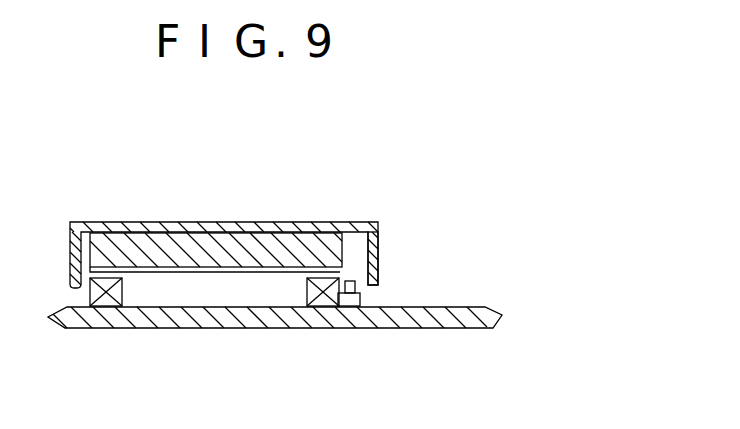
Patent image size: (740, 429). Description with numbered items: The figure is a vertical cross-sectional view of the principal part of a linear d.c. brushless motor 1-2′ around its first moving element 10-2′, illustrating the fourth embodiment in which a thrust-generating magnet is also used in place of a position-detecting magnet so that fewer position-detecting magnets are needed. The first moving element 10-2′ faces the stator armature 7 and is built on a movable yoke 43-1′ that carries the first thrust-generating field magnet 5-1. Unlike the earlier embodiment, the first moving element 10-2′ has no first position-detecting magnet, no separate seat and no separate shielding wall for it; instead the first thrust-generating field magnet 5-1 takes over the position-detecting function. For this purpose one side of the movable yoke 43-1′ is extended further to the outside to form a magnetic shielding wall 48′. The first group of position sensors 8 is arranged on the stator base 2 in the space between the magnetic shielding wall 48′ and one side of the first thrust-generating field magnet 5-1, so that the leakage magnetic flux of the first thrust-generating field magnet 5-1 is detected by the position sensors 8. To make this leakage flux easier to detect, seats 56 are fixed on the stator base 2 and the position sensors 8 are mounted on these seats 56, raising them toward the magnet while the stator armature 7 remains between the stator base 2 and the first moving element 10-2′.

The linear d.c. brushless motor 1-2′ is at (400, 199).
The first moving element 10-2′ is at (327, 219).
The movable yoke 43-1′ is at (230, 222).
The magnetic shielding wall 48′ is at (378, 247).
The first thrust-generating field magnet 5-1 is at (162, 240).
The stator armature 7 is at (155, 286).
The position sensors 8 is at (358, 286).
The seats 56 is at (352, 302).
The stator base 2 is at (175, 328).